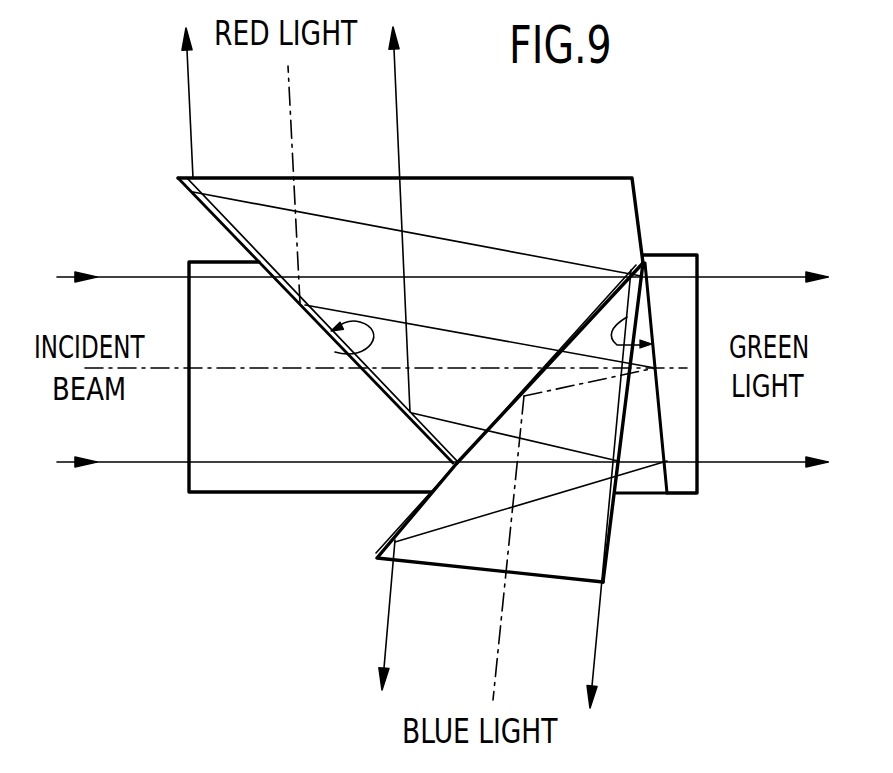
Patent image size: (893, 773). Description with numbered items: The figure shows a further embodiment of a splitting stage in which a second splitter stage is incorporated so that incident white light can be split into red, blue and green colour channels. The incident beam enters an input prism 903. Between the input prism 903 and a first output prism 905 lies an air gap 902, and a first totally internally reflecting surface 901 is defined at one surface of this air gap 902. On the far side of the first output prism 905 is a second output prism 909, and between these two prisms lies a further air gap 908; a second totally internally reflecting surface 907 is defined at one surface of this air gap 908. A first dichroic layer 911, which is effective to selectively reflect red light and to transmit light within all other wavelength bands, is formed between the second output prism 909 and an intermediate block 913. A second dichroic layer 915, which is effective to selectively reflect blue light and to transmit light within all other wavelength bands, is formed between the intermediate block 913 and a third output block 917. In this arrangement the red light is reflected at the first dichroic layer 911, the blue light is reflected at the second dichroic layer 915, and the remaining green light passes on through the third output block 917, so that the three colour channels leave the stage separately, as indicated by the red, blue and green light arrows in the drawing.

The first totally internally reflecting surface 901 is at (335, 352).
The air gap 902 is at (380, 387).
The input prism 903 is at (259, 427).
The first output prism 905 is at (523, 188).
The second totally internally reflecting surface 907 is at (492, 456).
The air gap 908 is at (595, 313).
The second output prism 909 is at (458, 548).
The first dichroic layer 911 is at (596, 535).
The intermediate block 913 is at (657, 480).
The second dichroic layer 915 is at (627, 317).
The third output block 917 is at (685, 437).